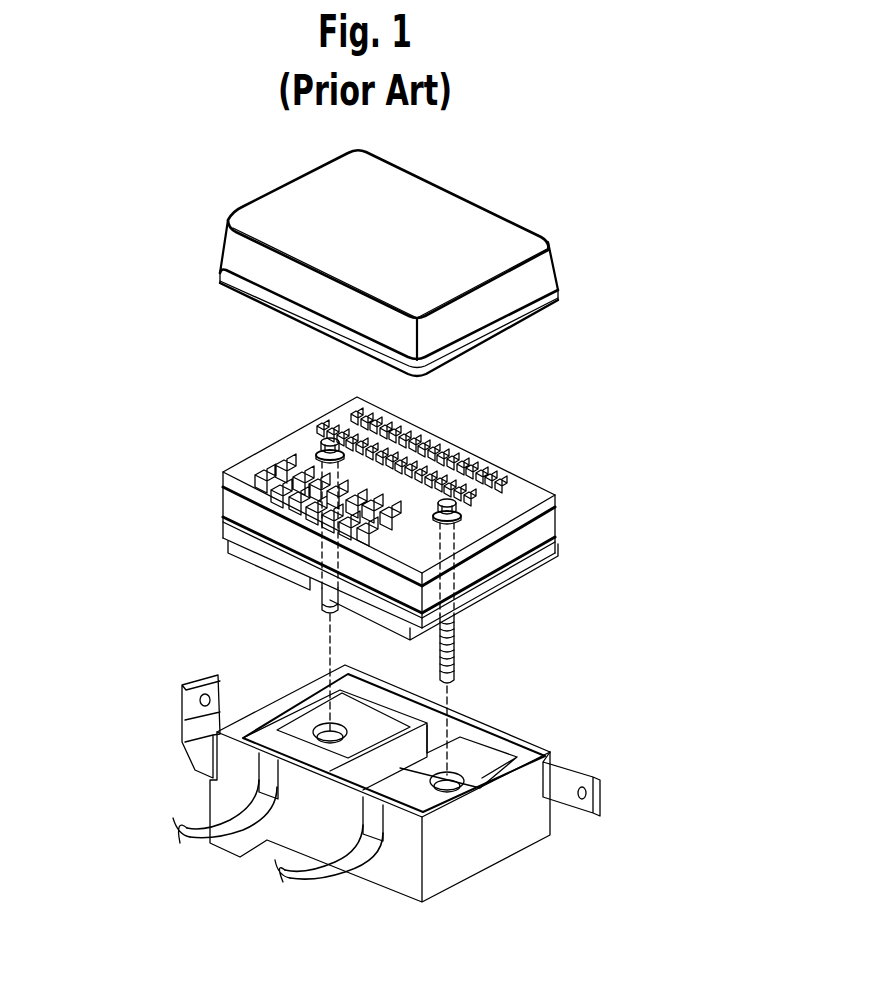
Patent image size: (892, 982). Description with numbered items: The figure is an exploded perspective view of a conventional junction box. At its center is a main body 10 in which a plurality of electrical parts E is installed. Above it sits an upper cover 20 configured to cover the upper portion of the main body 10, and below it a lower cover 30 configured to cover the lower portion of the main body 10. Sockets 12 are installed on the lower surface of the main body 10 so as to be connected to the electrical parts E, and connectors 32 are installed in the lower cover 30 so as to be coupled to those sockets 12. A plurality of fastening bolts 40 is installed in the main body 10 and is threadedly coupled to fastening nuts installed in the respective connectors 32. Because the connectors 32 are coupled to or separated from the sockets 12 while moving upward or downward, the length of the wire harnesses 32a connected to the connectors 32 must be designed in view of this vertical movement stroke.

The main body 10 is at (354, 563).
The sockets 12 is at (253, 560).
The upper cover 20 is at (240, 243).
The lower cover 30 is at (497, 848).
The connectors 32 is at (270, 735).
The wire harnesses 32a is at (183, 828).
The fastening bolts 40 is at (330, 440).
The electrical parts E is at (262, 464).